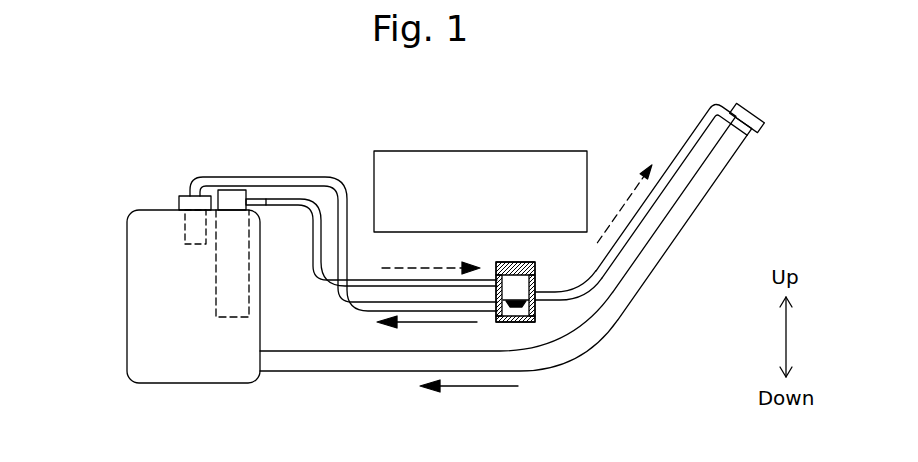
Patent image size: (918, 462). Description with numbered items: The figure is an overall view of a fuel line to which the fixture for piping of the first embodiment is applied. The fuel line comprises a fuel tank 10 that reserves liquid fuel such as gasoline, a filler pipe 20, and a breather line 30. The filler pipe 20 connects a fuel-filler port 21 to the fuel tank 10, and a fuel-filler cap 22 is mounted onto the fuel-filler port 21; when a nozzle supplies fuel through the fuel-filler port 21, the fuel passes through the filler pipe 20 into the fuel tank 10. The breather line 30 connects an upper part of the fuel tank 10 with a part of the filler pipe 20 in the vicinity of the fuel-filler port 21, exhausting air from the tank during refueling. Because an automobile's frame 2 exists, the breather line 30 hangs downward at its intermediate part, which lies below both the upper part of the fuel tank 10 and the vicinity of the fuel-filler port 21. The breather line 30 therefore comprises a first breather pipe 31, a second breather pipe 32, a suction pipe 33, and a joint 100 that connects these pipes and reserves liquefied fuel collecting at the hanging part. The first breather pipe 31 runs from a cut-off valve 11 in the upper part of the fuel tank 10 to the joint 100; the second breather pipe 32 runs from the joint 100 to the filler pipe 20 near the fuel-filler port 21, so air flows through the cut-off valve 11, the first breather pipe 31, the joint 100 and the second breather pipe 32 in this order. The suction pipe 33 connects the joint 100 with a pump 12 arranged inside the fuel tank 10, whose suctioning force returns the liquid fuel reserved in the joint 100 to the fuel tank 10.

The automobile's frame 2 is at (464, 150).
The fuel tank 10 is at (160, 384).
The cut-off valve 11 is at (183, 230).
The pump 12 is at (216, 287).
The filler pipe 20 is at (635, 298).
The fuel-filler port 21 is at (757, 108).
The fuel-filler cap 22 is at (740, 104).
The breather line 30 is at (450, 249).
The first breather pipe 31 is at (316, 177).
The second breather pipe 32 is at (684, 141).
The suction pipe 33 is at (281, 199).
The joint 100 is at (517, 336).